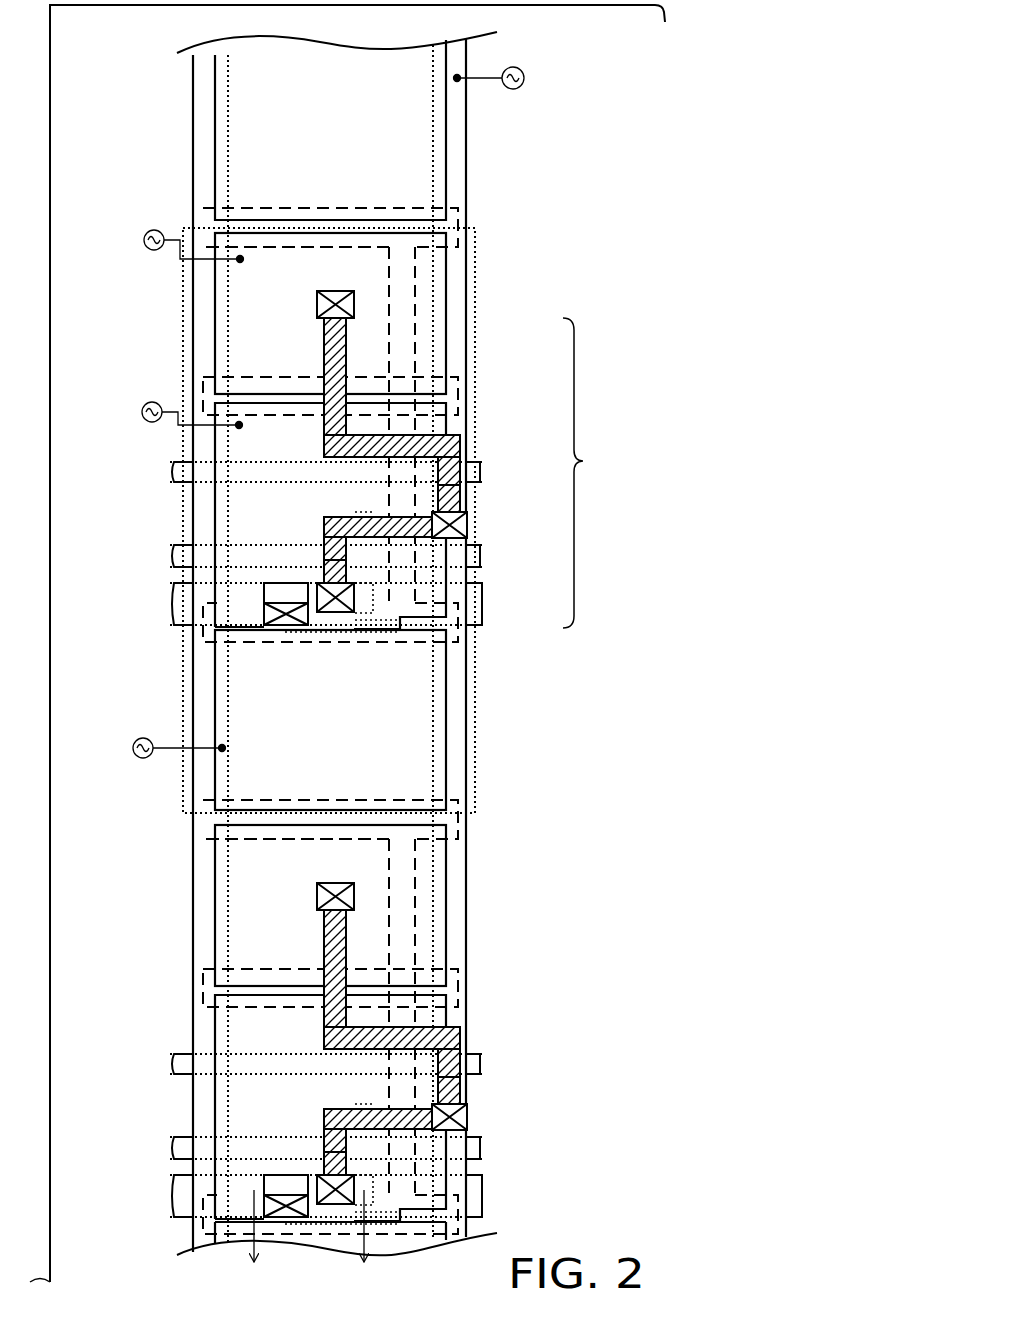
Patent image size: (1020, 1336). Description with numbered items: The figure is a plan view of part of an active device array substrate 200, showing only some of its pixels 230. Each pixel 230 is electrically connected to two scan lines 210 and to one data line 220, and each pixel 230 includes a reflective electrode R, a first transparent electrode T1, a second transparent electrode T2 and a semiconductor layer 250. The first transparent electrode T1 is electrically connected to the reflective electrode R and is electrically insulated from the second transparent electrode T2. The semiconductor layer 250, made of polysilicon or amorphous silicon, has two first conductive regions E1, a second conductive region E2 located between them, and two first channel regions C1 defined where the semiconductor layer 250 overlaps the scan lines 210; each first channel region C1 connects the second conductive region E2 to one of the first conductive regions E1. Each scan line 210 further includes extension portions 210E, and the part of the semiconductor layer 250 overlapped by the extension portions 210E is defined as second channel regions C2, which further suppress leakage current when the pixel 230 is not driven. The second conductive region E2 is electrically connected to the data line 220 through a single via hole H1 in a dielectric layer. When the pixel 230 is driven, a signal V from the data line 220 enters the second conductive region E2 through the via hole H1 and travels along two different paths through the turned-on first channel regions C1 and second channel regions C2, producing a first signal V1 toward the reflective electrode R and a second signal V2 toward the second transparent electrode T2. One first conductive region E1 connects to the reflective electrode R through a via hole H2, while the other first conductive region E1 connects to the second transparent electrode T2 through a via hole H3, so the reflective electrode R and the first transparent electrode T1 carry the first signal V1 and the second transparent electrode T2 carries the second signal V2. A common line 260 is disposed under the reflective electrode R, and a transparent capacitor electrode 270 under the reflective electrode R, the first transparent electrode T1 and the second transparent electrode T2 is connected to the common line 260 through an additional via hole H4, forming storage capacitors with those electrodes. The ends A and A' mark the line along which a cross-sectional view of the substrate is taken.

The active device array substrate 200 is at (628, 1156).
The scan line 210 is at (172, 553).
The extension portion 210E is at (360, 421).
The data line 220 is at (466, 53).
The pixel 230 is at (190, 227).
The semiconductor layer 250 is at (598, 473).
The common line 260 is at (172, 612).
The transparent capacitor electrode 270 is at (205, 634).
The first transparent electrode T1 is at (215, 698).
The second transparent electrode T2 is at (215, 300).
The reflective electrode R is at (215, 428).
The signal V is at (503, 82).
The first signal V1 is at (173, 582).
The second signal V2 is at (177, 244).
The first conductive region E1 is at (345, 337).
The second conductive region E2 is at (453, 500).
The first channel region C1 is at (456, 470).
The second channel region C2 is at (370, 438).
The via hole H1 is at (470, 521).
The via hole H2 is at (357, 596).
The via hole H3 is at (311, 298).
The additional via hole H4 is at (294, 601).
The section line end A is at (254, 1246).
The section line end A' is at (369, 1246).